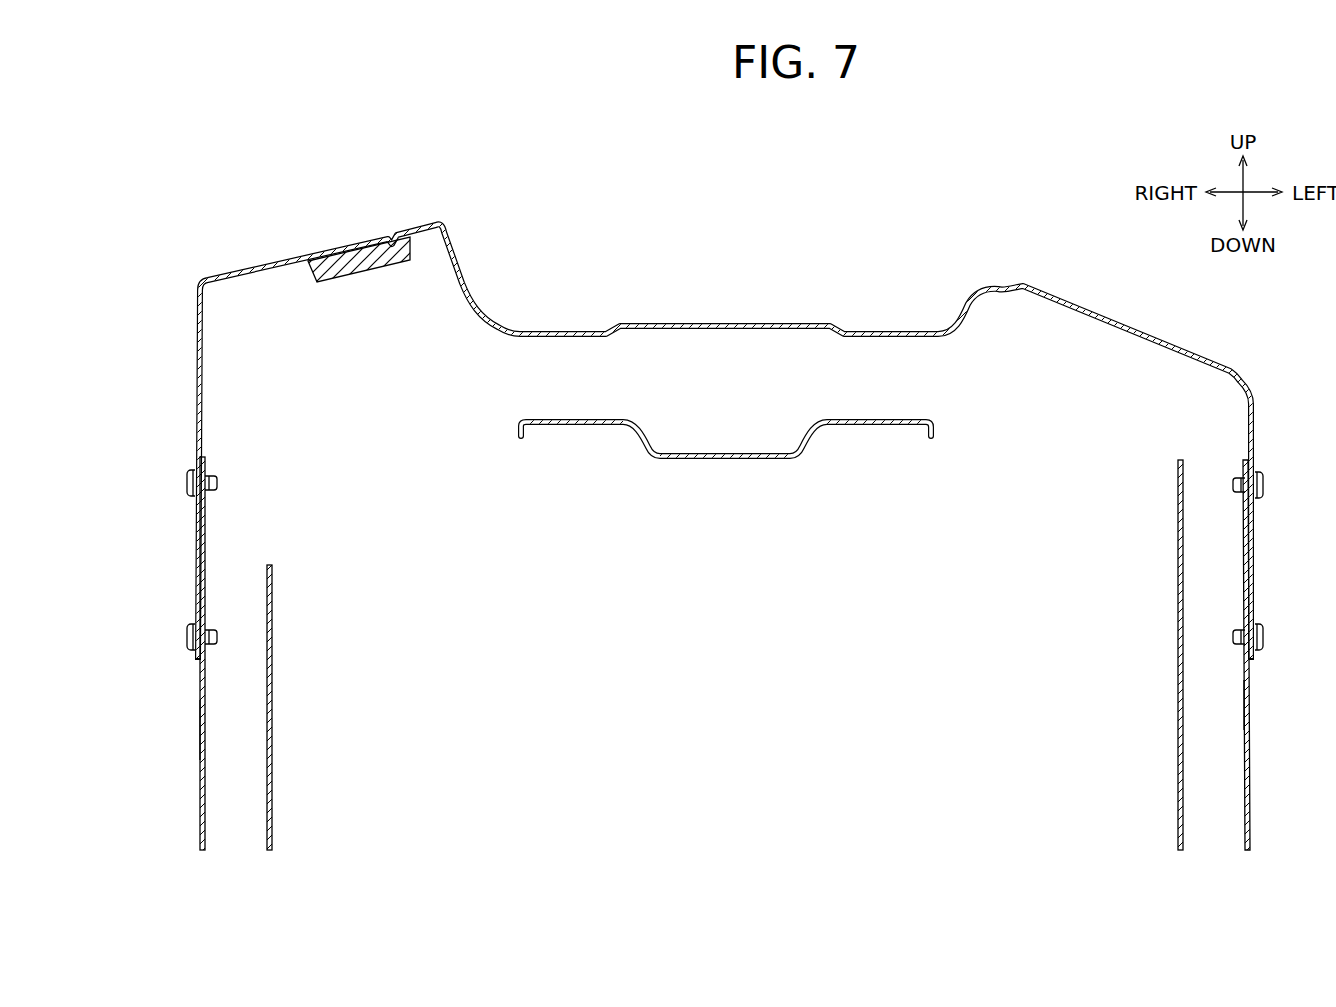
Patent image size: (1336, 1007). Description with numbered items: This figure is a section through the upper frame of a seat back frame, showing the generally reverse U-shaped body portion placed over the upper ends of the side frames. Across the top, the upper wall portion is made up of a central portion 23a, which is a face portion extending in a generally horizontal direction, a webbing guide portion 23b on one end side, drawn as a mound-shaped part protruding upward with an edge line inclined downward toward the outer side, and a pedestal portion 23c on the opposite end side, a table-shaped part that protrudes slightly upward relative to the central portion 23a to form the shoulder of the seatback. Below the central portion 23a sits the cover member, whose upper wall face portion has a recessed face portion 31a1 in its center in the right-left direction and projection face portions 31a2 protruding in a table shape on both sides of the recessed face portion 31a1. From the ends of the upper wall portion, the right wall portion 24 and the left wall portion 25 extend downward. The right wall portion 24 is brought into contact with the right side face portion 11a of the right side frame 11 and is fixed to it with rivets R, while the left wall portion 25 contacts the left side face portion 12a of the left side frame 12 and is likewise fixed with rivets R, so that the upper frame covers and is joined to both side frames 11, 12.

The right side frame 11 is at (200, 779).
The right side face portion 11a is at (200, 727).
The left side frame 12 is at (1250, 737).
The left side face portion 12a is at (1250, 697).
The central portion 23a is at (730, 323).
The webbing guide portion 23b is at (277, 257).
The pedestal portion 23c is at (1118, 308).
The right wall portion 24 is at (197, 383).
The left wall portion 25 is at (1255, 438).
The recessed face portion 31a1 is at (736, 460).
The projection face portion 31a2 is at (582, 427).
The rivet R is at (182, 483).